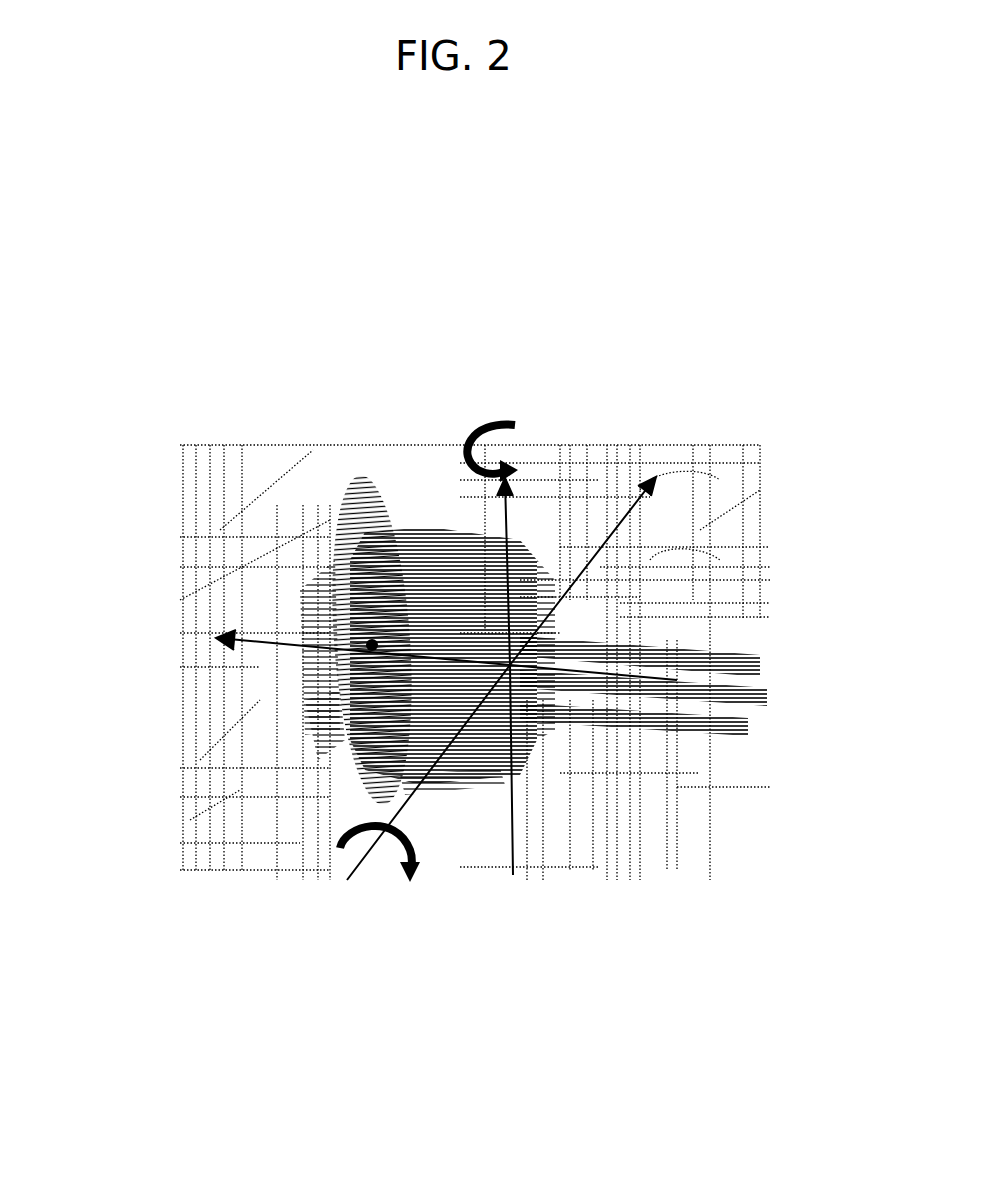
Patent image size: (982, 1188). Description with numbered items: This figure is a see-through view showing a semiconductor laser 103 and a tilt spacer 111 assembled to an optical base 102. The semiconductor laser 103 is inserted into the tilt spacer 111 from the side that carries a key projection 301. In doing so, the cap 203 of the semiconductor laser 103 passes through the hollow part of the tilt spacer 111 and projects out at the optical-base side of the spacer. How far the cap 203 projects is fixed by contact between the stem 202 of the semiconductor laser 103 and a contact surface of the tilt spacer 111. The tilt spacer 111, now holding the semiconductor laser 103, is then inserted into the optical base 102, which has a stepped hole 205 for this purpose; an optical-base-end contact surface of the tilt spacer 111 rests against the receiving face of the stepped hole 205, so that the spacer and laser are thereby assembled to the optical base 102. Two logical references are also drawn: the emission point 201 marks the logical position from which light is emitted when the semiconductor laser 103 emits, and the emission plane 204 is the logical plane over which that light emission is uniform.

The optical base 102 is at (612, 455).
The semiconductor laser 103 is at (608, 705).
The tilt spacer 111 is at (405, 570).
The emission point 201 is at (372, 645).
The stem 202 is at (457, 770).
The cap 203 is at (315, 680).
The emission plane 204 is at (345, 600).
The stepped hole 205 is at (245, 590).
The key projection 301 is at (492, 543).